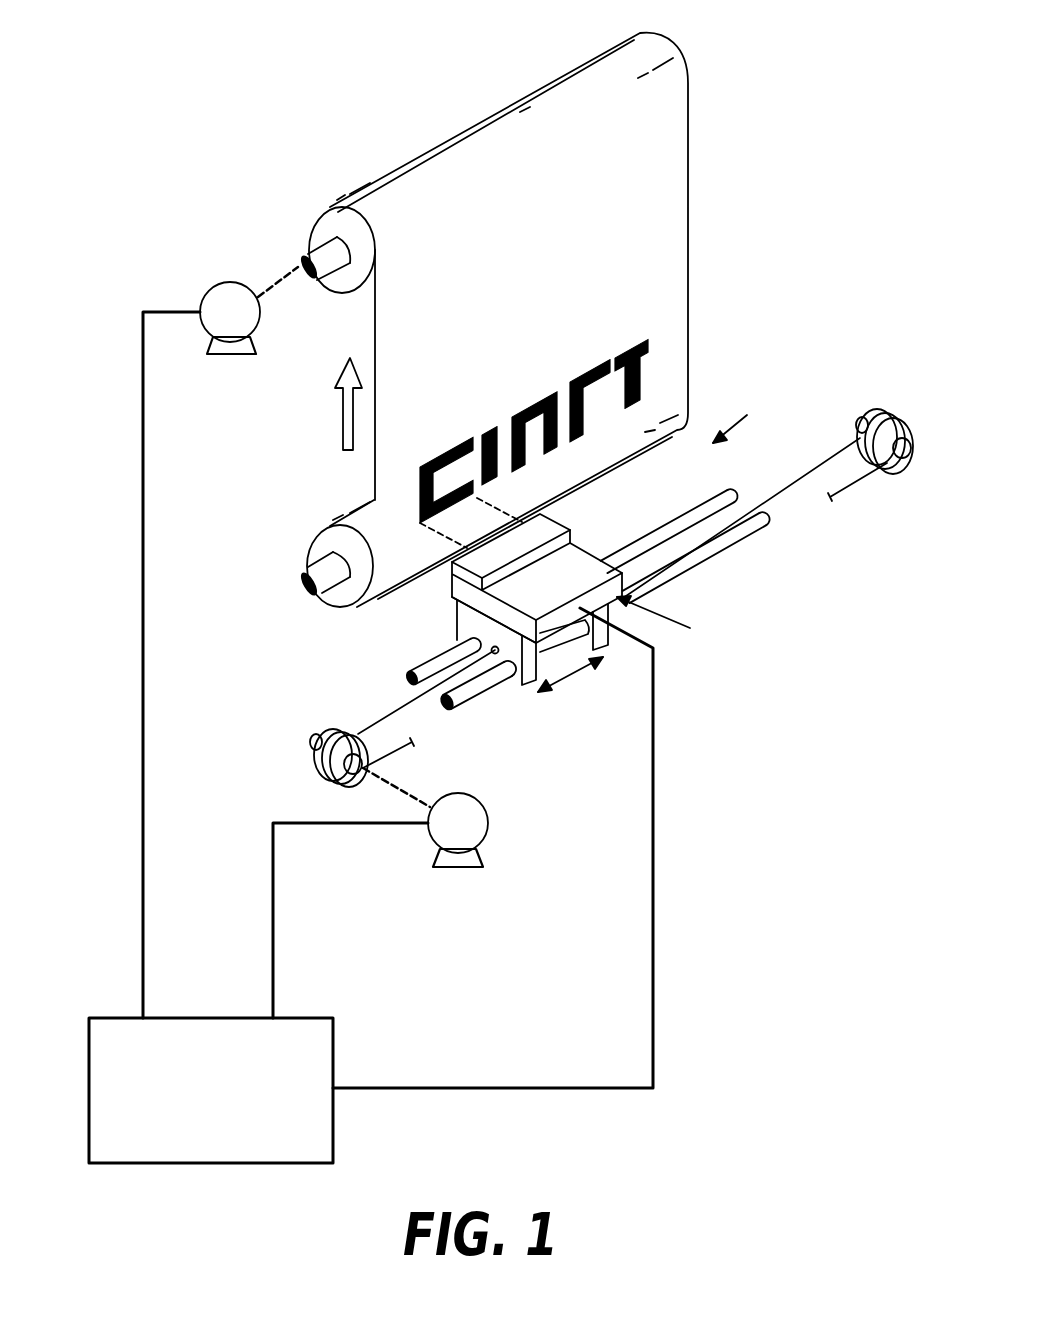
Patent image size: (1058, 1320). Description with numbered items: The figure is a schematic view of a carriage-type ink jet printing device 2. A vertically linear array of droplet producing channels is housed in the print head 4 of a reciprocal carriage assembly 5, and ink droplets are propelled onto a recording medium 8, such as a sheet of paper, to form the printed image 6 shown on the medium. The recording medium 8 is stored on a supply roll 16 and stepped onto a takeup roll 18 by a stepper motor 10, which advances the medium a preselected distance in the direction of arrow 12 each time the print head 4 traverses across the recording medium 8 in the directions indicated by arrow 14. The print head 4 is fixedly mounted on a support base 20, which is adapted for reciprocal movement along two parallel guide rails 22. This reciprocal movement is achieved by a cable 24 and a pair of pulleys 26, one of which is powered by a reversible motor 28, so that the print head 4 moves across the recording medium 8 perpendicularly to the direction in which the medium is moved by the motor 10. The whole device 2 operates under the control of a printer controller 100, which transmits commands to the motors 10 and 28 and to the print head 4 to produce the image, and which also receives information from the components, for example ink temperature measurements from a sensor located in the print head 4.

The ink jet printing device 2 is at (773, 416).
The print head 4 is at (453, 595).
The reciprocal carriage assembly 5 is at (708, 651).
The printed image 6 is at (500, 503).
The recording medium 8 is at (689, 157).
The motor 10 is at (220, 284).
The arrow 12 is at (343, 408).
The arrow 14 is at (572, 678).
The supply roll 16 is at (317, 542).
The takeup roll 18 is at (315, 220).
The support base 20 is at (466, 620).
The guide rails 22 is at (475, 700).
The cable 24 is at (395, 707).
The pulleys 26 is at (892, 463).
The reversible motor 28 is at (490, 822).
The printer controller 100 is at (211, 1018).